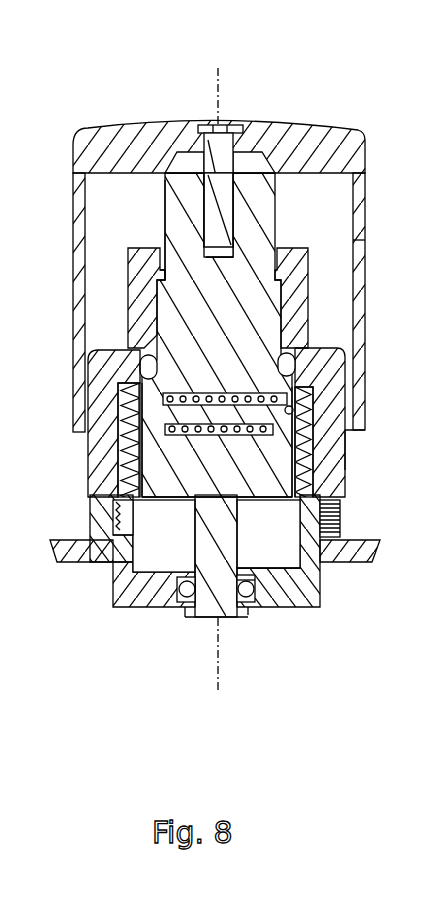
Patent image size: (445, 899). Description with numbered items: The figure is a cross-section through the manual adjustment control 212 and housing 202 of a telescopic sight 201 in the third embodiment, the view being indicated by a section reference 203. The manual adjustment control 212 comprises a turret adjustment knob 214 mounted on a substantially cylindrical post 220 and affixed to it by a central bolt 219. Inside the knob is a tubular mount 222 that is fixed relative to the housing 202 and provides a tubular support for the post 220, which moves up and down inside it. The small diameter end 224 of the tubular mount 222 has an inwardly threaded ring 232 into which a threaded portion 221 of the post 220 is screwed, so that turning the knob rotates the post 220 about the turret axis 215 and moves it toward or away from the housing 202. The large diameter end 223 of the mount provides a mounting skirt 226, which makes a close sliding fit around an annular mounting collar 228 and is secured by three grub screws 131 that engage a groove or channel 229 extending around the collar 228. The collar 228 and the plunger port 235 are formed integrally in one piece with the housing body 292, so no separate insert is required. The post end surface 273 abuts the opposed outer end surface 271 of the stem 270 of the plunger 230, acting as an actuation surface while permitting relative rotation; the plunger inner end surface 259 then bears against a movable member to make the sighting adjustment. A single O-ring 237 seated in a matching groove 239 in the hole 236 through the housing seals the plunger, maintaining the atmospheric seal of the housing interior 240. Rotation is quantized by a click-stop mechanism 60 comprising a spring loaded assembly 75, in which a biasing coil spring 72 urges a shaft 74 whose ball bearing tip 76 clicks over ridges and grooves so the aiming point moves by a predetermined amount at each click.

The click-stop mechanism 60 is at (216, 386).
The biasing coil spring 72 is at (278, 384).
The shaft 74 is at (292, 392).
The spring loaded assembly 75 is at (163, 407).
The ball bearing tip 76 is at (294, 411).
The grub screws 131 is at (341, 520).
The telescopic sight 201 is at (87, 718).
The housing 202 is at (90, 556).
The actuator 203 is at (354, 80).
The manual adjustment control 212 is at (357, 246).
The turret adjustment knob 214 is at (102, 127).
The turret axis 215 is at (227, 75).
The central bolt 219 is at (247, 125).
The cylindrical post 220 is at (268, 225).
The threaded portion 221 is at (160, 226).
The tubular mount 222 is at (312, 307).
The large diameter end 223 is at (338, 483).
The small diameter end 224 is at (158, 252).
The mounting skirt 226 is at (102, 461).
The mounting collar 228 is at (122, 515).
The groove or channel 229 is at (120, 531).
The plunger 230 is at (192, 548).
The inwardly threaded ring 232 is at (162, 274).
The plunger port 235 is at (243, 567).
The hole 236 is at (186, 600).
The O-ring 237 is at (250, 597).
The groove 239 is at (256, 583).
The housing interior 240 is at (310, 685).
The plunger inner end surface 259 is at (228, 612).
The stem 270 is at (206, 560).
The outer end surface 271 is at (222, 485).
The end surface 273 is at (207, 500).
The housing body 292 is at (350, 548).